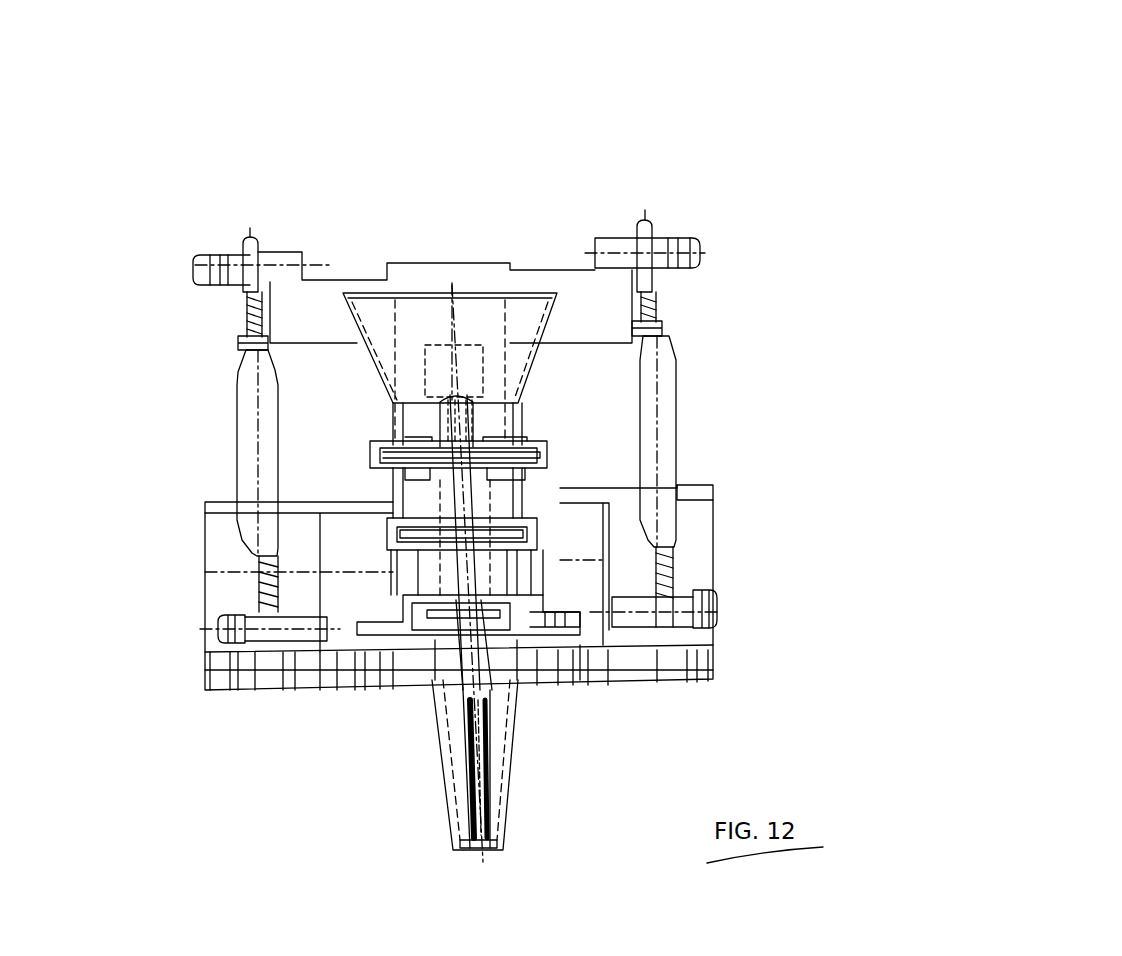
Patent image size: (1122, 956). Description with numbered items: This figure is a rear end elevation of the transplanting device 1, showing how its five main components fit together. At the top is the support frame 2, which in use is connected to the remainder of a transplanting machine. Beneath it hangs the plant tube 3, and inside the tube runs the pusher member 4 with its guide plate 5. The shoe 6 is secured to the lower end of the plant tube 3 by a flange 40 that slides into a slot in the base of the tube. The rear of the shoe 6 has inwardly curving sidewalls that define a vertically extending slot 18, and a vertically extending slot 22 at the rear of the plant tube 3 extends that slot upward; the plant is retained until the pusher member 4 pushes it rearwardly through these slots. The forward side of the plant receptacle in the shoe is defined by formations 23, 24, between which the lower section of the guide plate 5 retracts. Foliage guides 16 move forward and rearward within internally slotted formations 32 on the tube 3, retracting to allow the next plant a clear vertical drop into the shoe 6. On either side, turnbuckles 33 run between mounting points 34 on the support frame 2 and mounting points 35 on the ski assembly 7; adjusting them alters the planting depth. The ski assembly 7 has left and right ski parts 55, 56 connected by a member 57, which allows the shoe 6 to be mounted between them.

The device 1 is at (926, 162).
The support frame 2 is at (485, 262).
The plant tube 3 is at (528, 371).
The pusher member 4 is at (377, 443).
The guide plate 5 is at (450, 495).
The shoe 6 is at (520, 718).
The ski assembly 7 is at (205, 538).
The foliage guides 16 is at (555, 446).
The vertically extending slot 18 is at (463, 805).
The vertically extending slot 22 is at (490, 490).
The formation 23 is at (463, 770).
The formation 24 is at (488, 804).
The internally slotted formations 32 is at (543, 441).
The turnbuckles 33 is at (237, 437).
The mounting points 34 is at (208, 256).
The mounting points 35 is at (203, 627).
The flange 40 is at (590, 683).
The left ski part 55 is at (225, 592).
The right ski part 56 is at (702, 568).
The member 57 is at (575, 535).